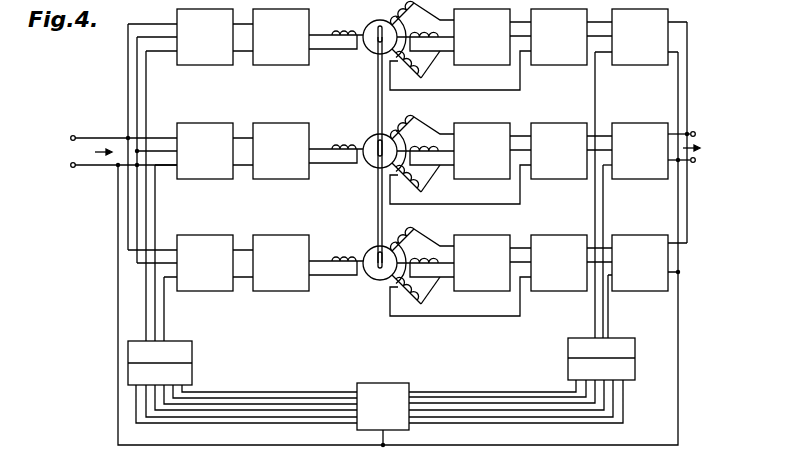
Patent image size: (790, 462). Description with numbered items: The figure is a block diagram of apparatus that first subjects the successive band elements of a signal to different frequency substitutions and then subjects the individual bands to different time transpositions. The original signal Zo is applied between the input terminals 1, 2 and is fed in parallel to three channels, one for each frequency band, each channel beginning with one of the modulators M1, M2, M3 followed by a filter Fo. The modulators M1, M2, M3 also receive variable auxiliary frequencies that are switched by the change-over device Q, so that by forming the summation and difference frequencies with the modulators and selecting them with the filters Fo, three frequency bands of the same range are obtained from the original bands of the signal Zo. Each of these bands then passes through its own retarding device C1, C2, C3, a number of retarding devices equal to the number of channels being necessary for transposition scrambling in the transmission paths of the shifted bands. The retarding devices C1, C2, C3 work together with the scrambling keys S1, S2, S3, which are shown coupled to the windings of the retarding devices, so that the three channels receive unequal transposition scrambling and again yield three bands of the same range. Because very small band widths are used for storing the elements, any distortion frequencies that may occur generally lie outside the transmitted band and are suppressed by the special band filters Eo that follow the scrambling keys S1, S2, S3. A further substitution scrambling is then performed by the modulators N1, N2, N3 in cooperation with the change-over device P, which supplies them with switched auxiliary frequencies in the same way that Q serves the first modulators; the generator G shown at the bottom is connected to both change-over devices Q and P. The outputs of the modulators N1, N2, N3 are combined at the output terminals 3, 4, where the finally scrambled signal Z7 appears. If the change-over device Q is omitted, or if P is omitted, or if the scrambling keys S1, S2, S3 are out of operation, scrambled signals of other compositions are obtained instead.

The input terminal 1 is at (120, 128).
The input terminal 2 is at (120, 176).
The output terminal 3 is at (685, 124).
The output terminal 4 is at (685, 171).
The modulator M1 is at (205, 37).
The modulator M2 is at (205, 151).
The modulator M3 is at (205, 263).
The filter Fo is at (281, 150).
The retarding device C1 is at (376, 20).
The retarding device C2 is at (369, 138).
The retarding device C3 is at (370, 250).
The scrambling key S1 is at (482, 37).
The scrambling key S2 is at (482, 151).
The scrambling key S3 is at (482, 263).
The band filter Eo is at (559, 150).
The modulator N1 is at (640, 37).
The modulator N2 is at (640, 151).
The modulator N3 is at (640, 263).
The change-over device Q is at (193, 366).
The change-over device P is at (636, 359).
The generator G is at (383, 414).
The signal Zo is at (93, 155).
The scrambled signal Z7 is at (700, 145).